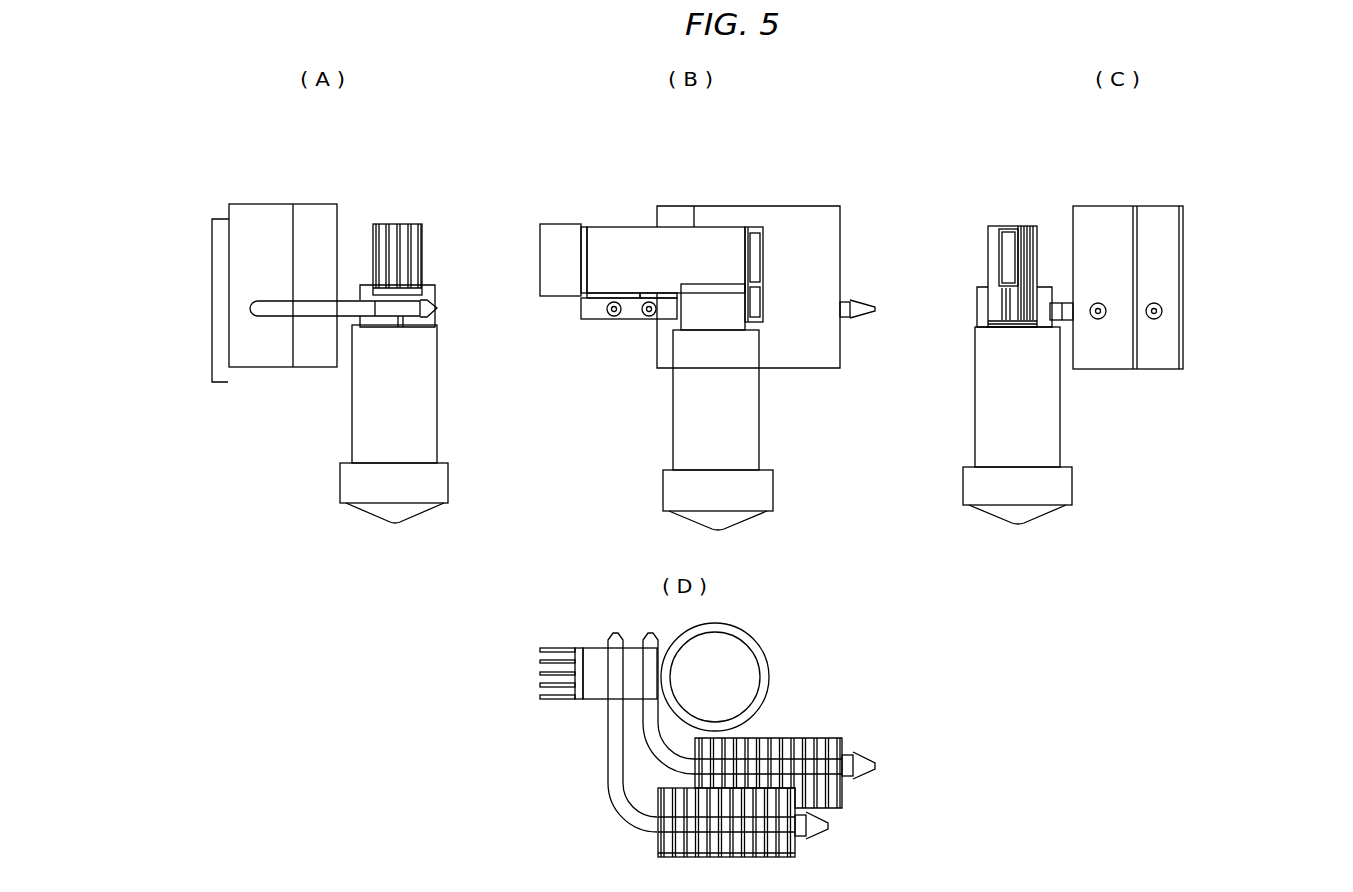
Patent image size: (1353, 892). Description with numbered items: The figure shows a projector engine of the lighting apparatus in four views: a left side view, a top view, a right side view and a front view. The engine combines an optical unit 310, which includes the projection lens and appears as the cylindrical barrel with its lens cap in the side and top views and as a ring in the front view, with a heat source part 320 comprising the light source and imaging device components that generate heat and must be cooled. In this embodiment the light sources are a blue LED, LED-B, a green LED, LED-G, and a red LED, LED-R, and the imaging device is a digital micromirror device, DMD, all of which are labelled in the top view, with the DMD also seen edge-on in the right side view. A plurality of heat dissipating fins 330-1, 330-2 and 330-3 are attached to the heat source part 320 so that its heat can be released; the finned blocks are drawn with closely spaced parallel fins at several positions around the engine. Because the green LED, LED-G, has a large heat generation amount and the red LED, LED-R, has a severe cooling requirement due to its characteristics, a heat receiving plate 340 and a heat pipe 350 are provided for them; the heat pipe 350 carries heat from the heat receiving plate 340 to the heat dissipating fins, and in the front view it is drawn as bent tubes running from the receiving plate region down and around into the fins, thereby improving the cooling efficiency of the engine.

The optical unit 310 is at (351, 412).
The heat source part 320 is at (435, 300).
The heat dissipating fin 330-1 is at (816, 346).
The heat dissipating fin 330-2 is at (380, 230).
The heat dissipating fin 330-3 is at (763, 293).
The heat receiving plate 340 is at (586, 300).
The heat pipe 350 is at (283, 310).
The blue LED LED-B is at (590, 227).
The green LED LED-G is at (614, 298).
The red LED LED-R is at (653, 297).
The element DMD is at (763, 240).